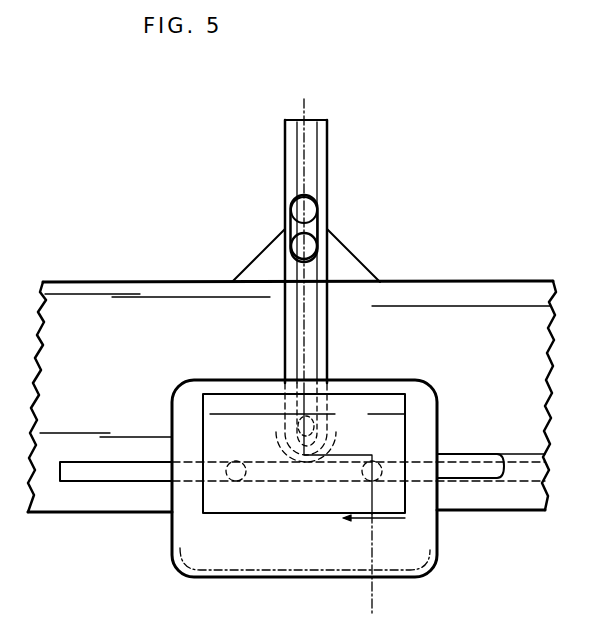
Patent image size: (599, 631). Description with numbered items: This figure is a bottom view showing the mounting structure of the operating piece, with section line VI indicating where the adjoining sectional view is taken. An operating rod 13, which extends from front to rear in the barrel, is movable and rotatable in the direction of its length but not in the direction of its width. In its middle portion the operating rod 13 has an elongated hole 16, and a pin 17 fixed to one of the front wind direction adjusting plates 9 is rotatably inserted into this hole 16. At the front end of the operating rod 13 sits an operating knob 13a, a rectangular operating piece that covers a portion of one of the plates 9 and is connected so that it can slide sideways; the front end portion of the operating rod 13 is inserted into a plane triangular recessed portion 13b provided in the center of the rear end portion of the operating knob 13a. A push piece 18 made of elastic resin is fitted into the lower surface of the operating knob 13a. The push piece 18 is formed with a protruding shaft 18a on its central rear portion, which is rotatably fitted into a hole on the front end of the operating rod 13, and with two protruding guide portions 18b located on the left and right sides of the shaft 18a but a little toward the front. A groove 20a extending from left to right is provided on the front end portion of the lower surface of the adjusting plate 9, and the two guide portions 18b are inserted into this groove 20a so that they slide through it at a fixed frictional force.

The front wind direction adjusting plate 9 is at (520, 293).
The operating rod 13 is at (318, 136).
The operating knob 13a is at (432, 556).
The plane triangular recessed portion 13b is at (336, 432).
The elongated hole 16 is at (312, 215).
The pin 17 is at (295, 232).
The push piece 18 is at (250, 503).
The protruding shaft 18a is at (276, 432).
The protruding guide portions 18b is at (228, 478).
The groove 20a is at (500, 478).
The section line VI- VI is at (304, 99).